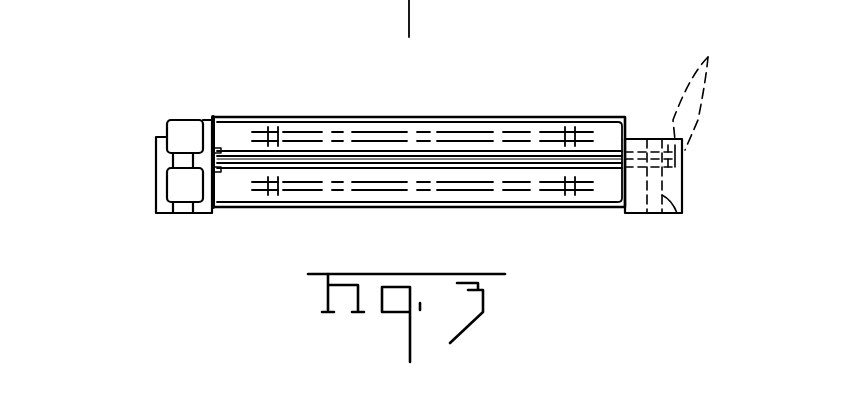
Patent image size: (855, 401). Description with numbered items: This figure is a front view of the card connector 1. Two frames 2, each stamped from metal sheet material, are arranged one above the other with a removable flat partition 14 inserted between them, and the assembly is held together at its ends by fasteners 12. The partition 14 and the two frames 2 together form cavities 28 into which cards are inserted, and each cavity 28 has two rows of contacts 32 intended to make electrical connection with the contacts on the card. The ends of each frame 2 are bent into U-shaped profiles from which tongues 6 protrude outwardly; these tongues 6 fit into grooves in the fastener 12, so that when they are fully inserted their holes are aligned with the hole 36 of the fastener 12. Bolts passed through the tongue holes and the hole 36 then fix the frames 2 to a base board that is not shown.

The cartridge assembly 1 is at (545, 53).
The frame 2 is at (450, 117).
The tongue 6 is at (699, 88).
The fastener 12 is at (155, 167).
The removable flat partition 14 is at (570, 163).
The cavity 28 is at (233, 125).
The pin 32 is at (272, 132).
The hole of the fastener 36 is at (677, 213).